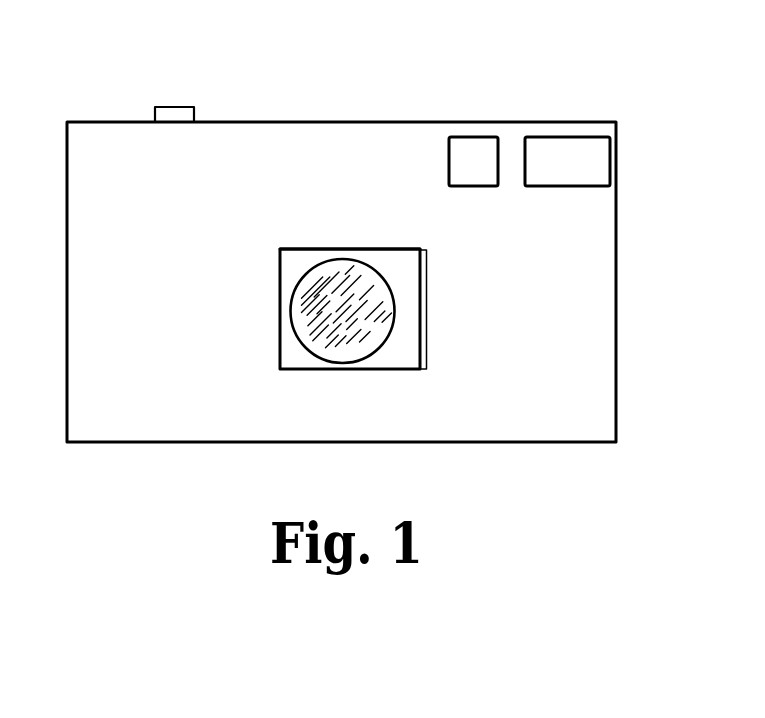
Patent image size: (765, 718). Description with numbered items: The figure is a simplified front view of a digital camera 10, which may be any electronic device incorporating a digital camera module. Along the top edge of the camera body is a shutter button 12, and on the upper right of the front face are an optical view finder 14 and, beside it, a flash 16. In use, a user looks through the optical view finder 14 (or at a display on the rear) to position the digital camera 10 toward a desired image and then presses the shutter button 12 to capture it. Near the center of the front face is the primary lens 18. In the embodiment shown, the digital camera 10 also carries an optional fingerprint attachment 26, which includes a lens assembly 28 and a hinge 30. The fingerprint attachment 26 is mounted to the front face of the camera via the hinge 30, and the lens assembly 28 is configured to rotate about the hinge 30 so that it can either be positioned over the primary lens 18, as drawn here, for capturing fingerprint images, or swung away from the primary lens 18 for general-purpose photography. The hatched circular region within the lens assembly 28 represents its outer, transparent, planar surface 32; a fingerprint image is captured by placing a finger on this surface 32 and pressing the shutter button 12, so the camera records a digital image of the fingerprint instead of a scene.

The digital camera 10 is at (129, 58).
The shutter button 12 is at (177, 107).
The optical view finder 14 is at (469, 137).
The flash 16 is at (562, 137).
The primary lens 18 is at (307, 270).
The fingerprint attachment 26 is at (317, 238).
The lens assembly 28 is at (380, 249).
The hinge 30 is at (423, 305).
The outer transparent planar surface 32 is at (342, 340).